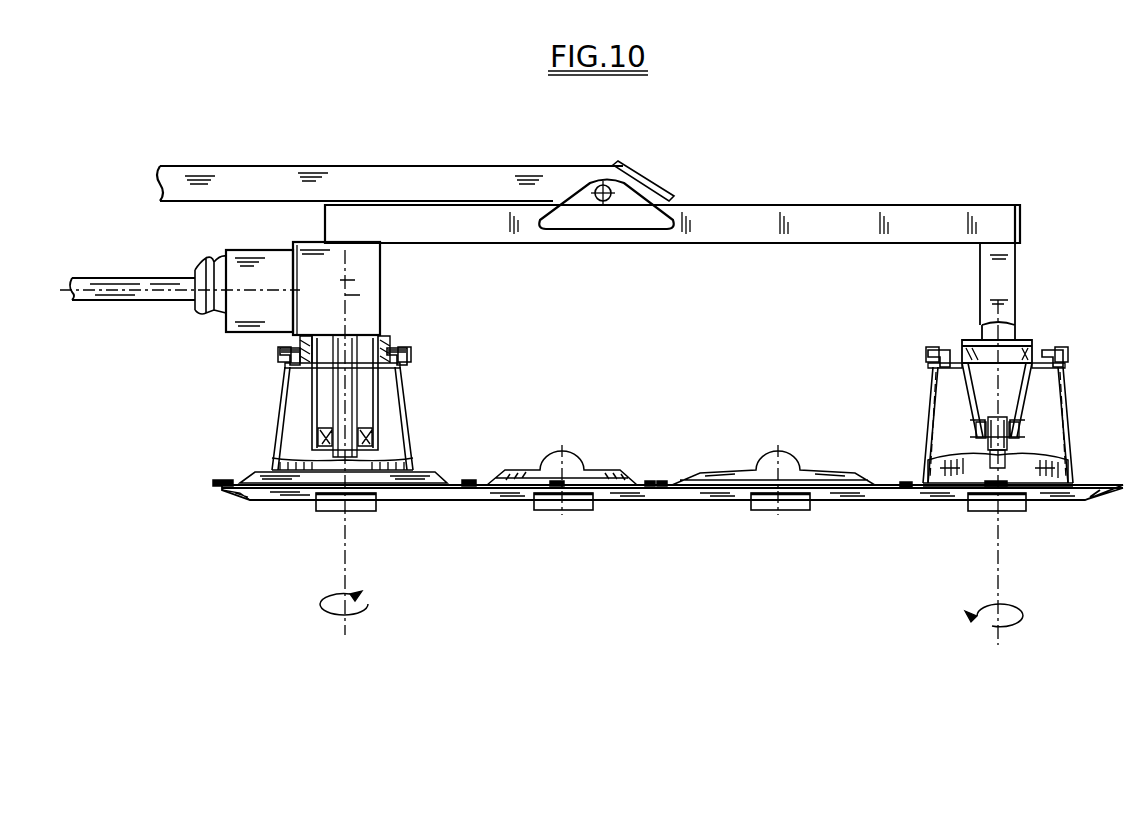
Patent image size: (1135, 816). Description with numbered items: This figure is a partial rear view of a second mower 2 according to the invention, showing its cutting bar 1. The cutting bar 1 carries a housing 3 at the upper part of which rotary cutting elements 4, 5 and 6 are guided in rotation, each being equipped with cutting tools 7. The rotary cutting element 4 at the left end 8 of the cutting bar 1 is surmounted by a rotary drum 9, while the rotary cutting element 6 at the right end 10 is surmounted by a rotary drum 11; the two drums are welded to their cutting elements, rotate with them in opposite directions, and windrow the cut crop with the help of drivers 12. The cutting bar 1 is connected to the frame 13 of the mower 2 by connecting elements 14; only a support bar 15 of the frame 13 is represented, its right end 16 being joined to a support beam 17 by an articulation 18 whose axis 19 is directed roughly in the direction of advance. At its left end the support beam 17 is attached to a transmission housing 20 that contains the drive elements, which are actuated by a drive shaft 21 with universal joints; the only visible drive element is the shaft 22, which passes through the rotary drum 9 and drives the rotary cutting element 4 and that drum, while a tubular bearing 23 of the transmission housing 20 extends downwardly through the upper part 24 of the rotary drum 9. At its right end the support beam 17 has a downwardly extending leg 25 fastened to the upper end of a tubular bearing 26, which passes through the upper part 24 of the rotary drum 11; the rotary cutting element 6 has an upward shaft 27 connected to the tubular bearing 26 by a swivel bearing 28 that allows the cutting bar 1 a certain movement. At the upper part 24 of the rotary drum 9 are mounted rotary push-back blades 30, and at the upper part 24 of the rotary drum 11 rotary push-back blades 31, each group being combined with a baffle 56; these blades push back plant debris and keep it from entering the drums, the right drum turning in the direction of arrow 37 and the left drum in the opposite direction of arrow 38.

The cutting bar 1 is at (612, 565).
The mower 2 is at (345, 140).
The housing 3 is at (484, 481).
The rotary cutting element 4 is at (262, 472).
The rotary cutting element 5 is at (603, 472).
The rotary cutting element 6 is at (1050, 470).
The cutting tools 7 is at (558, 481).
The left end 8 is at (258, 537).
The rotary drum 9 is at (285, 410).
The right end 10 is at (1101, 513).
The rotary drum 11 is at (935, 403).
The drivers 12 is at (935, 424).
The frame 13 is at (390, 151).
The connecting elements 14 is at (808, 204).
The support bar 15 is at (222, 178).
The right end 16 is at (654, 170).
The support beam 17 is at (925, 214).
The articulation 18 is at (613, 215).
The axis 19 is at (608, 198).
The transmission housing 20 is at (364, 275).
The drive shaft 21 is at (105, 290).
The shaft 22 is at (350, 425).
The tubular bearing 23 is at (378, 394).
The upper part 24 is at (422, 333).
The leg 25 is at (1003, 272).
The tubular bearing 26 is at (1030, 402).
The shaft 27 is at (1003, 443).
The swivel bearing 28 is at (980, 432).
The rotary push-back blades 30 is at (410, 356).
The rotary push-back blades 31 is at (1062, 355).
The arrow 37 is at (1012, 627).
The arrow 38 is at (332, 617).
The baffle 56 is at (396, 347).